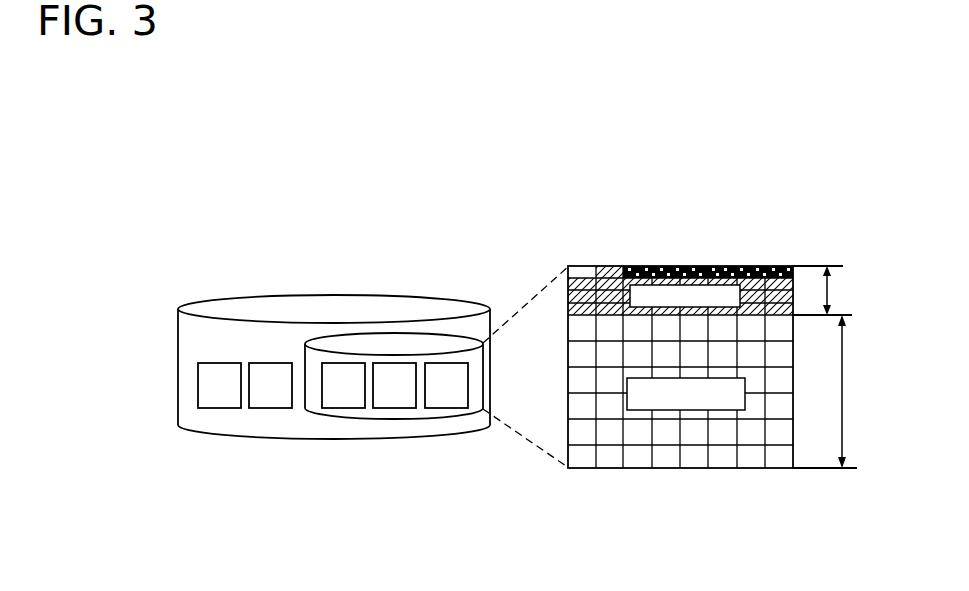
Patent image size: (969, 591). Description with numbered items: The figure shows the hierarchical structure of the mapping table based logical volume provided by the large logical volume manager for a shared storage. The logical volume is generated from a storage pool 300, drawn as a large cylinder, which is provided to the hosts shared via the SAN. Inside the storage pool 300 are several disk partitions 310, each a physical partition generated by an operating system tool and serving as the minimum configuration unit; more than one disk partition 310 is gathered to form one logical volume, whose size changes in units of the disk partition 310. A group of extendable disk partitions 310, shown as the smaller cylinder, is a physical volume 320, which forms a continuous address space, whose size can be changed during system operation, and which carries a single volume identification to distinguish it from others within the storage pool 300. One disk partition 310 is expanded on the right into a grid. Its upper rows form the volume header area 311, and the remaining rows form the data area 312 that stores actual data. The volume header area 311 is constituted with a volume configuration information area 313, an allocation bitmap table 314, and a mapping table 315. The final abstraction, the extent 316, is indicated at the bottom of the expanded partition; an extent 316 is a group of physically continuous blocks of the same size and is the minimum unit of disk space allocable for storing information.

The storage pool 300 is at (200, 298).
The disk partition 310 is at (658, 245).
The volume header area 311 is at (830, 290).
The data area 312 is at (845, 392).
The volume configuration information area 313 is at (600, 265).
The allocation bitmap table 314 is at (690, 266).
The mapping table 315 is at (735, 268).
The extent 316 is at (580, 470).
The physical volume 320 is at (393, 420).